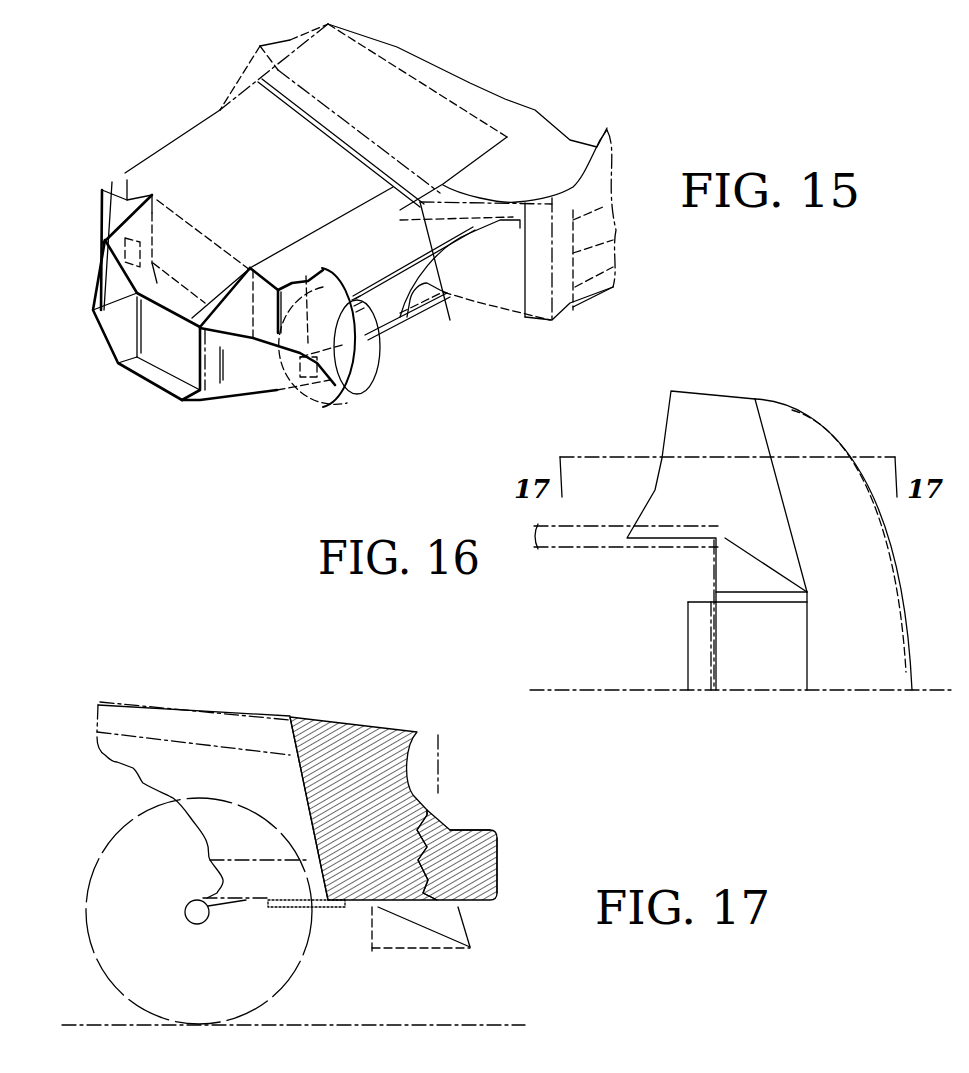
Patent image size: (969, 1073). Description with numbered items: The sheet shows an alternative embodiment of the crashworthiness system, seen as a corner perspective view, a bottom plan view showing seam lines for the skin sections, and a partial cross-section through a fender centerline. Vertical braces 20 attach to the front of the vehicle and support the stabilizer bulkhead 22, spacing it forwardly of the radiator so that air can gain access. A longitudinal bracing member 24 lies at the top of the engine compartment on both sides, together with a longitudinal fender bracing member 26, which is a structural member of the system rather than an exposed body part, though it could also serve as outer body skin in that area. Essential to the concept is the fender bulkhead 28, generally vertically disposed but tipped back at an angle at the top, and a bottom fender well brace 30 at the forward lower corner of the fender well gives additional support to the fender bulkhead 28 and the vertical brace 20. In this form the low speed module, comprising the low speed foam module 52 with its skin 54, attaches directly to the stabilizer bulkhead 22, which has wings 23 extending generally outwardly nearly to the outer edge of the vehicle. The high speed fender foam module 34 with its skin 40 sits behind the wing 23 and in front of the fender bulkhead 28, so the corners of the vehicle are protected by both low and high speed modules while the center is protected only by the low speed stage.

In FIG. 15, the vertical braces 20 is at (207, 293).
In FIG. 16, the vertical braces 20 is at (754, 602).
In FIG. 15, the stabilizer bulkhead 22 is at (167, 338).
In FIG. 16, the stabilizer bulkhead 22 is at (809, 647).
In FIG. 17, the stabilizer bulkhead 22 is at (443, 827).
In FIG. 15, the wings 23 is at (102, 207).
In FIG. 16, the wings 23 is at (768, 442).
In FIG. 15, the longitudinal bracing member 24 is at (322, 240).
In FIG. 17, the longitudinal bracing member 24 is at (183, 747).
In FIG. 15, the longitudinal fender bracing member 26 is at (427, 287).
In FIG. 15, the fender bulkhead 28 is at (355, 390).
In FIG. 17, the fender bulkhead 28 is at (300, 787).
In FIG. 17, the bottom fender well brace 30 is at (313, 907).
In FIG. 15, the fender high speed foam module 34 is at (288, 412).
In FIG. 17, the fender high speed foam module 34 is at (417, 733).
In FIG. 16, the skin 40 is at (709, 420).
In FIG. 17, the skin 40 is at (387, 730).
In FIG. 17, the low speed foam module 52 is at (497, 880).
In FIG. 16, the skin 54 is at (798, 442).
In FIG. 17, the skin 54 is at (497, 850).